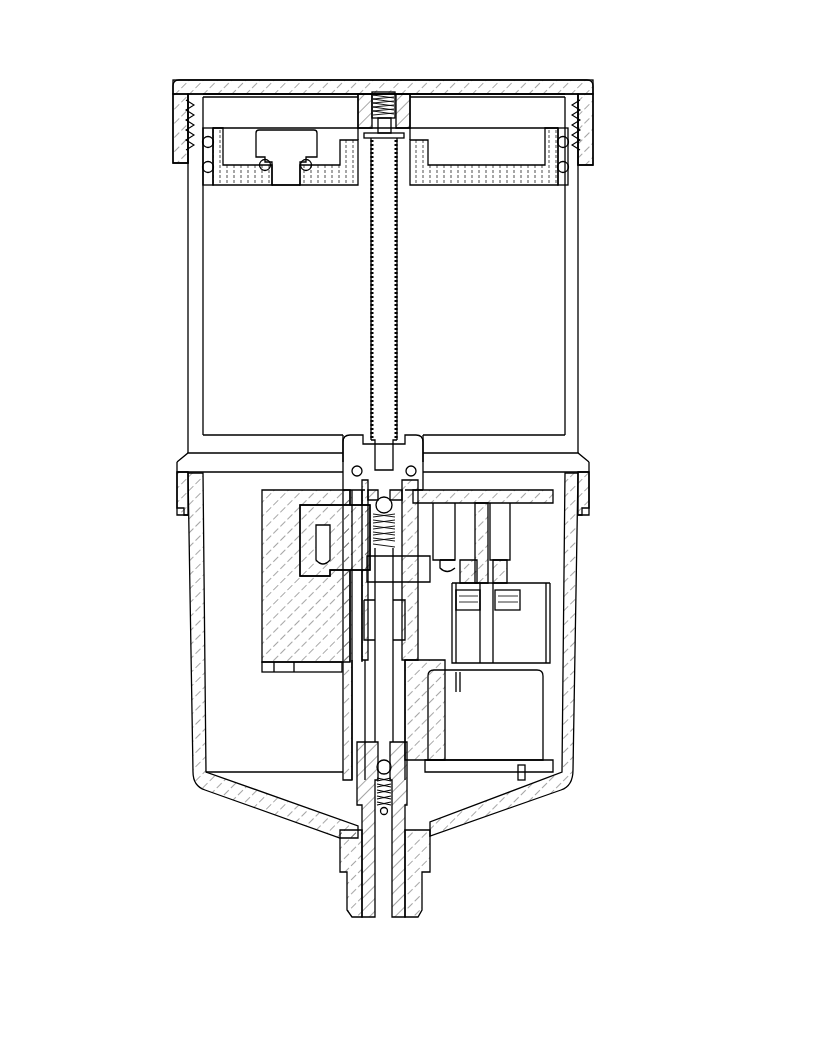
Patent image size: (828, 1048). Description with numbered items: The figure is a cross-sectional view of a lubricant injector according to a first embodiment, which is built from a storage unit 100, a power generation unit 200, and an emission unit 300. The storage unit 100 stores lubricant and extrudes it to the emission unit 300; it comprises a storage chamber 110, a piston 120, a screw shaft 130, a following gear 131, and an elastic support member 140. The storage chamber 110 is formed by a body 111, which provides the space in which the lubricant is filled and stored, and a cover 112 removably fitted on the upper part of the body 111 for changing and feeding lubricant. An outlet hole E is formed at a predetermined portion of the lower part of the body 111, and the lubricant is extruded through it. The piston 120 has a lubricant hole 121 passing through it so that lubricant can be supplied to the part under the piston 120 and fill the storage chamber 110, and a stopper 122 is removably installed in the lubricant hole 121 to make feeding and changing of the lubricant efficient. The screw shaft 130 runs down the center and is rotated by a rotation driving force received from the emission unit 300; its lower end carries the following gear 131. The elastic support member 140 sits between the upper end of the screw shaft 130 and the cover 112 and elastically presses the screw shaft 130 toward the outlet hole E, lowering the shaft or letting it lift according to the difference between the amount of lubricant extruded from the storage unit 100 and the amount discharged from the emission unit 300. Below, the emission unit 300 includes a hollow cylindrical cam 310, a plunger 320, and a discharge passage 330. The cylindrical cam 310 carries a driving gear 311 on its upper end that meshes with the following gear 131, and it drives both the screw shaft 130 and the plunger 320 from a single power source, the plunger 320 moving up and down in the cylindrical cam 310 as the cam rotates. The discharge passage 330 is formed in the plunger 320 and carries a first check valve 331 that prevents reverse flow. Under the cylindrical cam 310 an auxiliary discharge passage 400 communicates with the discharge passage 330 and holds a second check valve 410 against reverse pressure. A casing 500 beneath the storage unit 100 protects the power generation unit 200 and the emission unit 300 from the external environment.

The storage unit 100 is at (592, 233).
The storage chamber 110 is at (92, 190).
The body 111 is at (193, 201).
The cover 112 is at (178, 140).
The piston 120 is at (472, 188).
The lubricant hole 121 is at (305, 187).
The stopper 122 is at (292, 145).
The screw shaft 130 is at (393, 318).
The following gear 131 is at (408, 440).
The elastic support member 140 is at (383, 93).
The power generation unit 200 is at (537, 586).
The emission unit 300 is at (282, 735).
The cylindrical cam 310 is at (318, 588).
The driving gear 311 is at (425, 454).
The plunger 320 is at (350, 576).
The discharge passage 330 is at (383, 624).
The first check valve 331 is at (322, 545).
The auxiliary discharge passage 400 is at (358, 815).
The second check valve 410 is at (377, 768).
The casing 500 is at (190, 680).
The outlet hole E is at (343, 462).